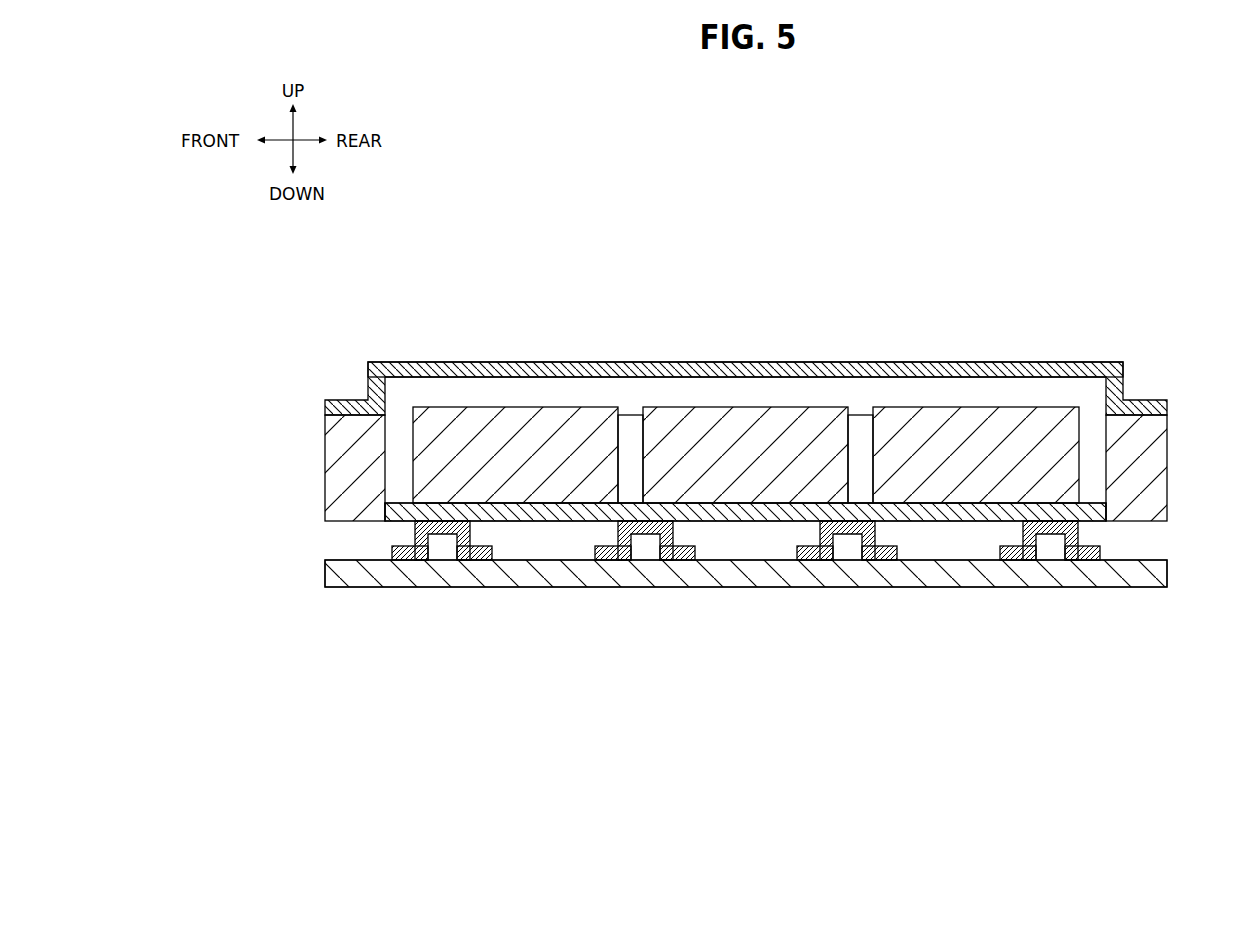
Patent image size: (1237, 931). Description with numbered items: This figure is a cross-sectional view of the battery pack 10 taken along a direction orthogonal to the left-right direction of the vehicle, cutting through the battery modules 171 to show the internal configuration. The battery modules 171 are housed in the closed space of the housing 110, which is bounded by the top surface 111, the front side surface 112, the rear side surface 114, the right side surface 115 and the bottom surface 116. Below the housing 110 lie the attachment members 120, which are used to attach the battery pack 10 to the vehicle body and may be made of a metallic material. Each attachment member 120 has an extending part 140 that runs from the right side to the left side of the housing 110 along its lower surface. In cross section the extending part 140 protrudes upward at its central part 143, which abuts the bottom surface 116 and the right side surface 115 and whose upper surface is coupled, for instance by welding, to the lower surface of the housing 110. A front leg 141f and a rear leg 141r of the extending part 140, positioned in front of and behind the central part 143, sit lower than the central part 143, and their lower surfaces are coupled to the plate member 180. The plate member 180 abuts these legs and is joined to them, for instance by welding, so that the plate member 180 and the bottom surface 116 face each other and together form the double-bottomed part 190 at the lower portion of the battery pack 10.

The battery pack 10 is at (991, 127).
The housing 110 is at (1118, 344).
The top surface 111 is at (555, 364).
The front side surface 112 is at (338, 466).
The rear side surface 114 is at (1152, 468).
The right side surface 115 is at (630, 430).
The bottom surface 116 is at (776, 512).
The attachment member 120 is at (318, 553).
The extending part 140 is at (404, 535).
The front leg 141f is at (405, 553).
The rear leg 141r is at (492, 555).
The central part 143 is at (447, 532).
The battery module 171 is at (908, 438).
The plate member 180 is at (712, 576).
The double-bottomed part 190 is at (690, 631).